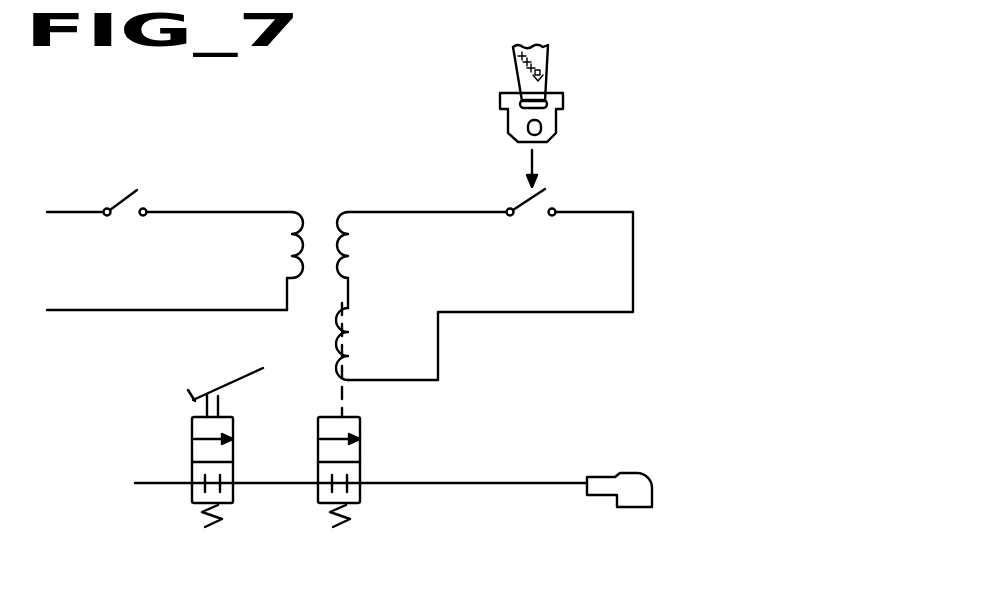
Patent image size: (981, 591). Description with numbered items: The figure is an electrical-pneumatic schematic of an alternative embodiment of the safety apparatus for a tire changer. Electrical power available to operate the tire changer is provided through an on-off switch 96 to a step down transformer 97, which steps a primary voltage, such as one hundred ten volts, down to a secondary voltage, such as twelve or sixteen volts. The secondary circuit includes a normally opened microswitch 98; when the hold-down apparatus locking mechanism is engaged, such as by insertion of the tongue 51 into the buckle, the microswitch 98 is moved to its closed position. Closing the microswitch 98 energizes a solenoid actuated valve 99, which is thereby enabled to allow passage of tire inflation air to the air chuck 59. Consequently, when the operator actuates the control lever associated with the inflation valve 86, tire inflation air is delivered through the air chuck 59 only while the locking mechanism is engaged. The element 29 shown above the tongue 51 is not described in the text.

The specimen tube 29 is at (547, 68).
The tongue 51 is at (552, 118).
The air chuck 59 is at (633, 473).
The inflation valve 86 is at (192, 495).
The on-off switch 96 is at (137, 191).
The step down transformer 97 is at (310, 213).
The microswitch 98 is at (533, 195).
The solenoid actuated valve 99 is at (317, 495).